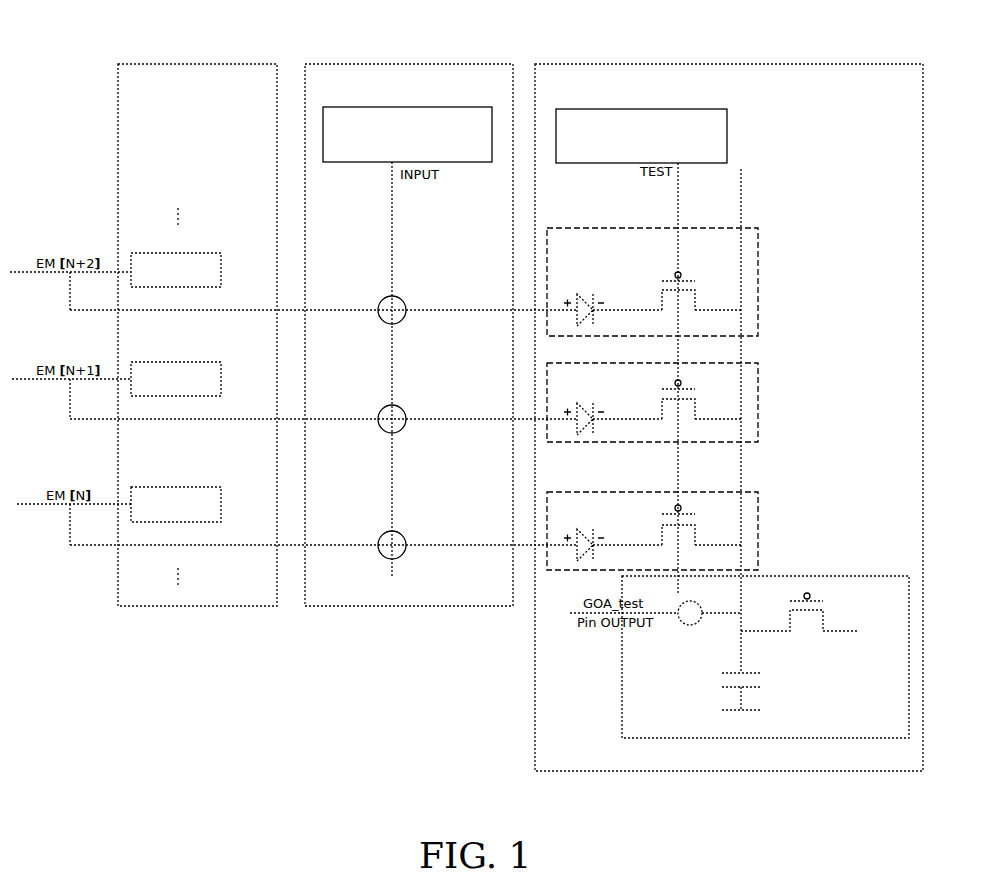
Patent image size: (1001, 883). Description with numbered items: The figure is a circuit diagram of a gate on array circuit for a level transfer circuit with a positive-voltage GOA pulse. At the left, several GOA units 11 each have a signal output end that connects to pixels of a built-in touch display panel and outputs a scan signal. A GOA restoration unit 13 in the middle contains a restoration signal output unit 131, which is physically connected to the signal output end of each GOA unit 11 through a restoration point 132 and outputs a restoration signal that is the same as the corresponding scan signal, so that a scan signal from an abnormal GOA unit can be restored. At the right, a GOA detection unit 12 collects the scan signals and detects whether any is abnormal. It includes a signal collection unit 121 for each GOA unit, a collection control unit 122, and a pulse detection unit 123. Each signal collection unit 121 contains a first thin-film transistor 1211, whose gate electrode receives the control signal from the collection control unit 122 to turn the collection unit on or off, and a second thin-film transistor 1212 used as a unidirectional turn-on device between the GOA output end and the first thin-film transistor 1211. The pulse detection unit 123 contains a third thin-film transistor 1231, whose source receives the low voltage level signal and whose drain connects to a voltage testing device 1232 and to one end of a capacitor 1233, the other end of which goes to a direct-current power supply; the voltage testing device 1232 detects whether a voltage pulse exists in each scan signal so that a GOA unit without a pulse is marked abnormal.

The GOA unit 11 is at (203, 63).
The GOA detection unit 12 is at (703, 63).
The GOA restoration unit 13 is at (366, 63).
The restoration signal output unit 131 is at (395, 107).
The restoration point 132 is at (400, 306).
The collection control unit 122 is at (585, 109).
The signal collection unit 121 is at (562, 247).
The first thin-film transistor 1211 is at (695, 296).
The second thin-film transistor 1212 is at (581, 298).
The pulse detection unit 123 is at (785, 576).
The third thin-film transistor 1231 is at (825, 622).
The voltage testing device 1232 is at (697, 604).
The capacitor 1233 is at (748, 678).